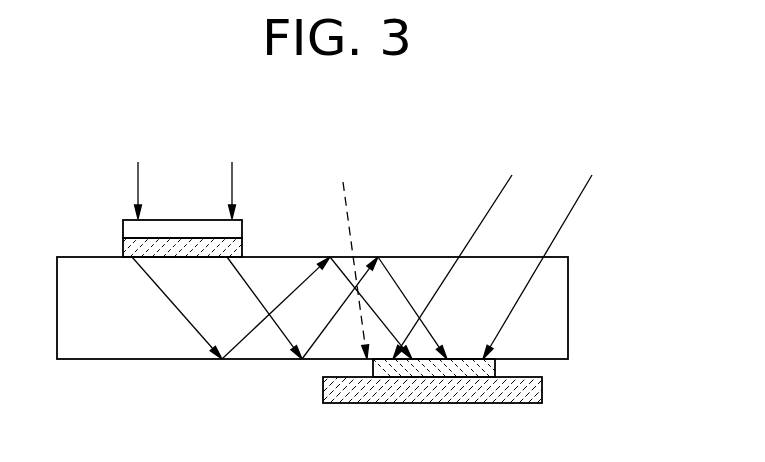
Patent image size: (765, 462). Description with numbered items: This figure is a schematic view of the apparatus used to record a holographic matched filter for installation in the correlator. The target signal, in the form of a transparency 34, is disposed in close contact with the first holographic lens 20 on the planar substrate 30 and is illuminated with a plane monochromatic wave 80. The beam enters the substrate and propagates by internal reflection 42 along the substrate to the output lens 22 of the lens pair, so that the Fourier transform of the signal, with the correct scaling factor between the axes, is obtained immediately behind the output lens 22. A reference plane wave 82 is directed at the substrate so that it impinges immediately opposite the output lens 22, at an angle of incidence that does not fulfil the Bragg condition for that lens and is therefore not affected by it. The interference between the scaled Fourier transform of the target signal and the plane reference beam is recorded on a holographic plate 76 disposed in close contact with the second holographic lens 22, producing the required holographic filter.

The planar substrate 30 is at (108, 326).
The transparency 34 is at (123, 230).
The first holographic lens 20 is at (242, 247).
The plane monochromatic wave 80 is at (232, 192).
The reference plane wave 82 is at (493, 203).
The internal reflection 42 is at (313, 338).
The output lens 22 is at (495, 366).
The holographic plate 76 is at (323, 393).